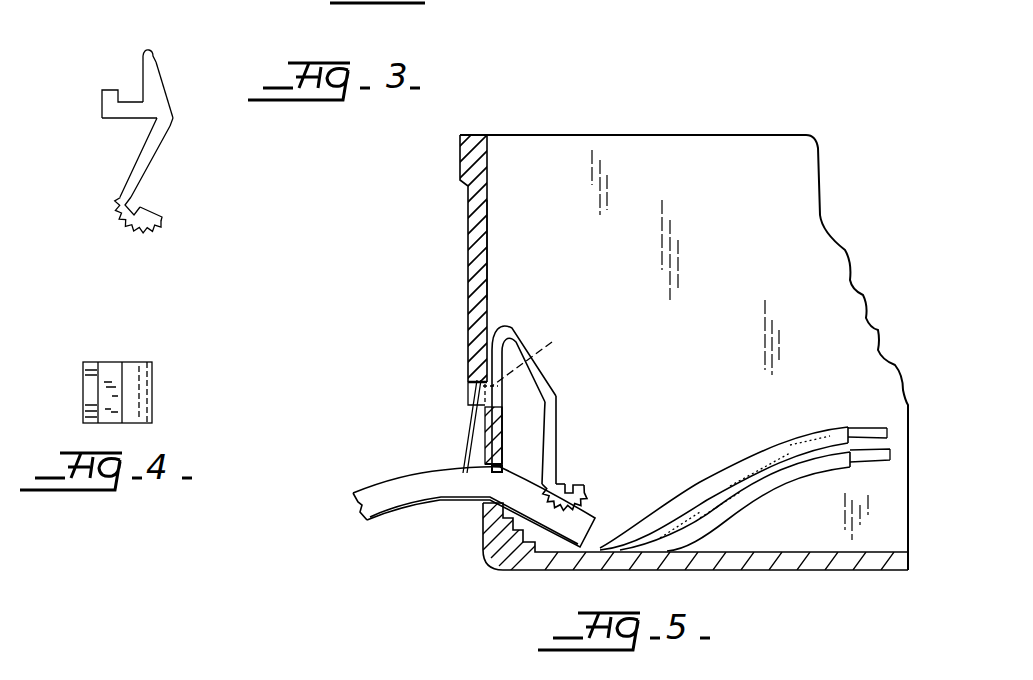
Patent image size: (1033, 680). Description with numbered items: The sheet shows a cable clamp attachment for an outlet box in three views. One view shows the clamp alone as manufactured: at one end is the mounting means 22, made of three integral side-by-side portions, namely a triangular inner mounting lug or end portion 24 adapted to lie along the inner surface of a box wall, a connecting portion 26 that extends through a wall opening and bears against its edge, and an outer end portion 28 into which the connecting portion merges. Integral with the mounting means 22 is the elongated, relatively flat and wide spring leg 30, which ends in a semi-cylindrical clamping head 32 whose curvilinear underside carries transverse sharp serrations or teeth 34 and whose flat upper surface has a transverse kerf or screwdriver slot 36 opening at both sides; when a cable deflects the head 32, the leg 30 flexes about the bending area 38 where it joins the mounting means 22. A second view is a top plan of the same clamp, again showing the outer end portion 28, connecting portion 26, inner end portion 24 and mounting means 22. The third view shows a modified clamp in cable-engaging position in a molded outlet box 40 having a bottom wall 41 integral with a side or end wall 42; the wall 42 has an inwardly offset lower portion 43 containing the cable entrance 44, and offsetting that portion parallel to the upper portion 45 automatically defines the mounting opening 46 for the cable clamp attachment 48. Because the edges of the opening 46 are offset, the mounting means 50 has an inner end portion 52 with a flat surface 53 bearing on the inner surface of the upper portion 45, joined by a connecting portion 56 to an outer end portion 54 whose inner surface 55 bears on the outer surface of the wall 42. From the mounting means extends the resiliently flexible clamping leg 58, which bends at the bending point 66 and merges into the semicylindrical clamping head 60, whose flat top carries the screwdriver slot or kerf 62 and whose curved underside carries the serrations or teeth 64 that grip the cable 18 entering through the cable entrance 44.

In FIG. 5, the cable 18 is at (372, 522).
In FIG. 3, the mounting means 22 is at (165, 78).
In FIG. 4, the mounting means 22 is at (154, 390).
In FIG. 3, the inner mounting lug or end portion 24 is at (150, 52).
In FIG. 4, the inner mounting lug or end portion 24 is at (140, 374).
In FIG. 3, the connecting portion 26 is at (115, 121).
In FIG. 4, the connecting portion 26 is at (110, 362).
In FIG. 3, the outer end portion 28 is at (102, 96).
In FIG. 4, the outer end portion 28 is at (83, 389).
In FIG. 3, the spring leg 30 is at (153, 153).
In FIG. 3, the clamping head 32 is at (160, 215).
In FIG. 3, the serrations or teeth 34 is at (160, 229).
In FIG. 3, the kerf or screwdriver slot 36 is at (137, 211).
In FIG. 3, the bending area 38 is at (174, 118).
In FIG. 5, the outlet box 40 is at (465, 244).
In FIG. 5, the bottom wall 41 is at (830, 572).
In FIG. 5, the side or end wall 42 is at (467, 302).
In FIG. 5, the inwardly offset lower portion 43 is at (477, 507).
In FIG. 5, the cable entrance 44 is at (504, 477).
In FIG. 5, the upper portion of wall 45 is at (488, 249).
In FIG. 5, the mounting opening 46 is at (480, 387).
In FIG. 5, the cable clamp attachment 48 is at (552, 383).
In FIG. 5, the mounting means 50 is at (467, 428).
In FIG. 5, the inner end portion 52 is at (470, 357).
In FIG. 5, the flat surface 53 is at (468, 338).
In FIG. 5, the outer end portion 54 is at (471, 484).
In FIG. 5, the inner surface 55 is at (480, 432).
In FIG. 5, the connecting portion 56 is at (528, 351).
In FIG. 5, the clamping leg 58 is at (558, 435).
In FIG. 5, the clamping head 60 is at (583, 481).
In FIG. 5, the screwdriver slot or kerf 62 is at (565, 480).
In FIG. 5, the serrations or teeth 64 is at (593, 500).
In FIG. 5, the bending point 66 is at (558, 403).